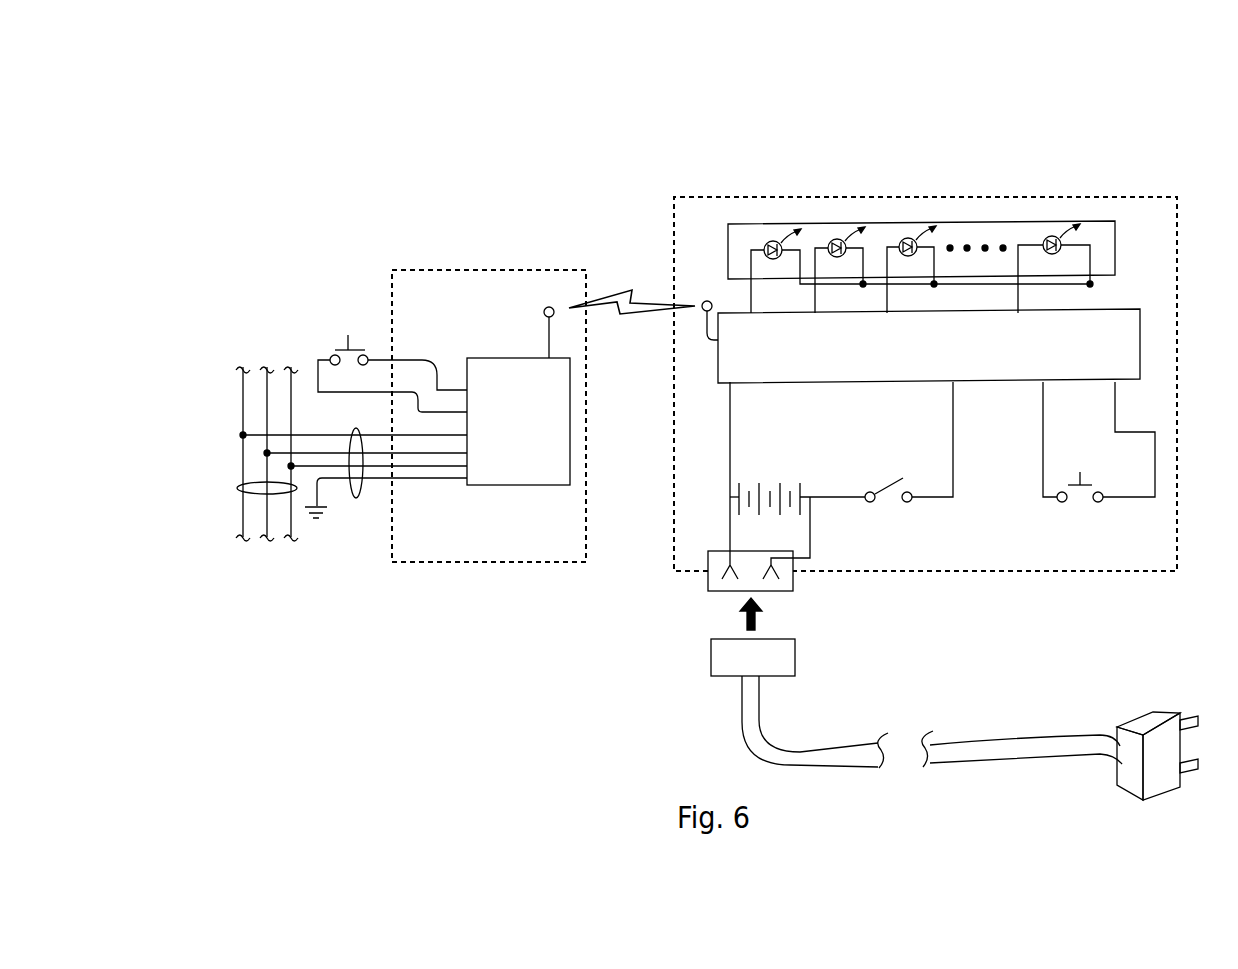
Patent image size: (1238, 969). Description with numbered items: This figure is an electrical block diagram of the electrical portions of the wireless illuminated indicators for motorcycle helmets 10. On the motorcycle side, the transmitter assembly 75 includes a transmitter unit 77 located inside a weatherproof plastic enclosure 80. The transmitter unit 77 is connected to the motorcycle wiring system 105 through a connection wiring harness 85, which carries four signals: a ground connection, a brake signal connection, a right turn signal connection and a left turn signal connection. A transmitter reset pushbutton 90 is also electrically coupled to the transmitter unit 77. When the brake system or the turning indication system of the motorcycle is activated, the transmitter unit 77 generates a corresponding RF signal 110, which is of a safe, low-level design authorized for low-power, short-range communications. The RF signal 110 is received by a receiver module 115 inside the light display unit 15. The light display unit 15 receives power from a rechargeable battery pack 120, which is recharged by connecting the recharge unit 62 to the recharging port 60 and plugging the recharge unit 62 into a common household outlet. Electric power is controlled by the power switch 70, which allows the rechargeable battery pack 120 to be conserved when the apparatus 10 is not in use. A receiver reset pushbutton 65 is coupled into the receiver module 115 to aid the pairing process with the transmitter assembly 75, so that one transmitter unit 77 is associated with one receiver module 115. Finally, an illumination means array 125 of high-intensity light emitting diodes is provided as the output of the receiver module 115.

The wireless illuminated indicators for motorcycle helmets 10 is at (340, 217).
The light display unit 15 is at (1122, 165).
The recharging port 60 is at (708, 576).
The recharge unit 62 is at (855, 745).
The receiver reset pushbutton 65 is at (1080, 501).
The power switch 70 is at (890, 503).
The transmitter assembly 75 is at (345, 642).
The transmitter unit 77 is at (555, 382).
The weatherproof plastic enclosure 80 is at (466, 562).
The connection wiring harness 85 is at (356, 498).
The transmitter reset pushbutton 90 is at (338, 345).
The motorcycle wiring system 105 is at (237, 490).
The RF signal 110 is at (620, 291).
The receiver module 115 is at (721, 371).
The rechargeable battery pack 120 is at (738, 487).
The illumination means array 125 is at (742, 223).